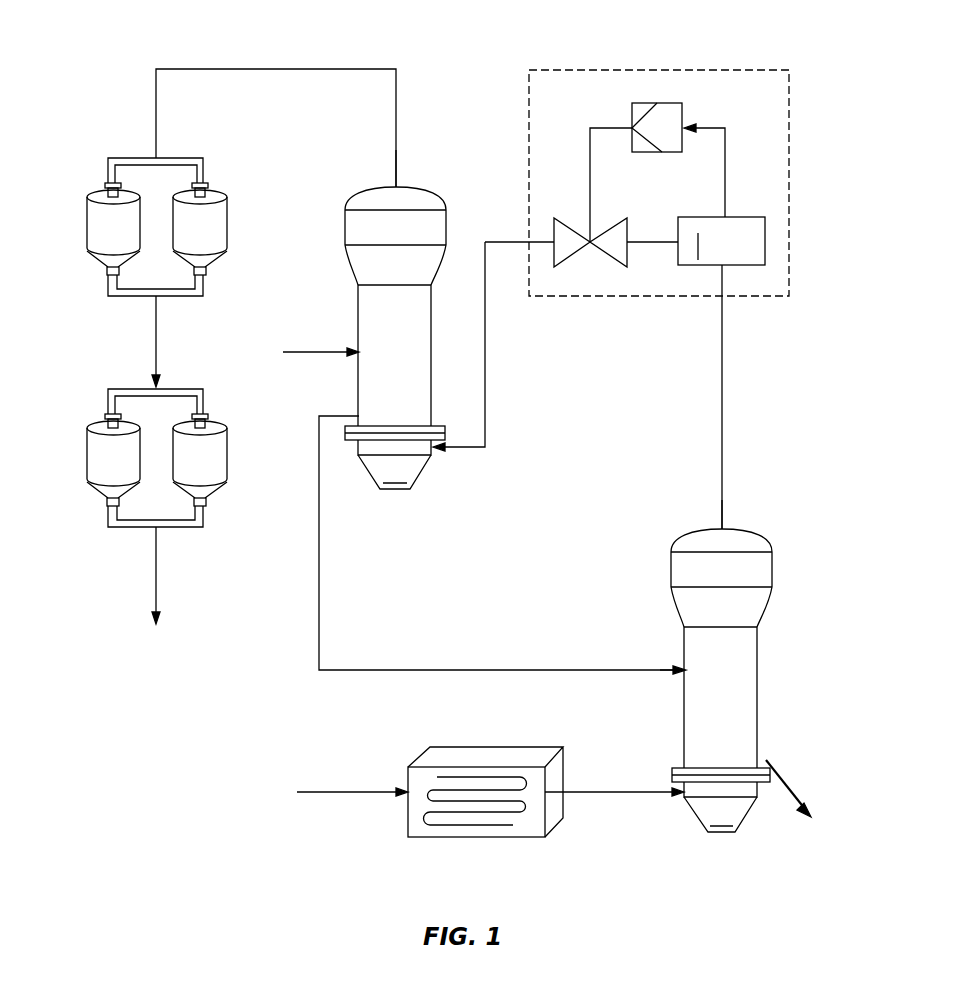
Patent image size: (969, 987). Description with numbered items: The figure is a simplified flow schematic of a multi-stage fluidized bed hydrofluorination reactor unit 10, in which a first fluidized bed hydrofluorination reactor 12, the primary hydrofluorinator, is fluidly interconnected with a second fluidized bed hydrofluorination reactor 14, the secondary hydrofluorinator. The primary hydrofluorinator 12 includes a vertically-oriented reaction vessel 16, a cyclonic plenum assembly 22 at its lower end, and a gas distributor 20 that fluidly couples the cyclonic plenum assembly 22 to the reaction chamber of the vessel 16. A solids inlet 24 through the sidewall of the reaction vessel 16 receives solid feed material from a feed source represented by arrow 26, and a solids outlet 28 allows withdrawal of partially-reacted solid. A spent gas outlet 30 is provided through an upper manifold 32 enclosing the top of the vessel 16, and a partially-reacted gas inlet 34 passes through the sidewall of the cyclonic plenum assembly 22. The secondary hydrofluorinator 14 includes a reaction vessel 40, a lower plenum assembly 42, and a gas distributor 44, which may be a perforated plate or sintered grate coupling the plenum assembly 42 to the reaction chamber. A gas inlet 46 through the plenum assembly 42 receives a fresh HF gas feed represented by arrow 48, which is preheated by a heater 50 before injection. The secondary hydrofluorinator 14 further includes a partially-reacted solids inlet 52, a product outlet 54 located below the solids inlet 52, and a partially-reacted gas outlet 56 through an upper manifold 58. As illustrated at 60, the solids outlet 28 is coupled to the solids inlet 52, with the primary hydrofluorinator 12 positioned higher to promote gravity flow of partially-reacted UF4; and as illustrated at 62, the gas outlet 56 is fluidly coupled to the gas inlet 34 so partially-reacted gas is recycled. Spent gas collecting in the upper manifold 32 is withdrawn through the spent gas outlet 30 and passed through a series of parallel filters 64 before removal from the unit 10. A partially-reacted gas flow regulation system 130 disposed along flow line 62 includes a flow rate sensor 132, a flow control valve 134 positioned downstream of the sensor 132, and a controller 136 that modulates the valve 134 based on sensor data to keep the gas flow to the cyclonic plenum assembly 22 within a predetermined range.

The multi-stage fluidized bed hydrofluorination reactor unit 10 is at (141, 52).
The first fluidized bed hydrofluorination reactor 12 is at (348, 305).
The second fluidized bed hydrofluorination reactor 14 is at (770, 671).
The reaction vessel 16 is at (403, 345).
The gas distributor 20 is at (402, 426).
The cyclonic plenum assembly 22 is at (407, 483).
The solids inlet 24 is at (356, 355).
The feed source 26 is at (315, 352).
The solids outlet 28 is at (358, 413).
The spent gas outlet 30 is at (394, 177).
The upper manifold 32 is at (406, 240).
The partially-reacted gas inlet 34 is at (433, 452).
The reaction vessel 40 is at (731, 708).
The lower plenum assembly 42 is at (728, 770).
The gas distributor 44 is at (731, 825).
The gas inlet 46 is at (678, 795).
The fresh reactant gas feed 48 is at (352, 790).
The heater 50 is at (485, 757).
The partially-reacted solids inlet 52 is at (683, 673).
The product outlet 54 is at (758, 755).
The partially-reacted gas outlet 56 is at (726, 529).
The upper manifold 58 is at (731, 583).
The solids coupling 60 is at (550, 668).
The flow line 62 is at (722, 352).
The parallel filters 64 is at (100, 226).
The partially-reacted gas flow regulation system 130 is at (772, 127).
The flow rate sensor 132 is at (742, 223).
The flow control valve 134 is at (580, 237).
The controller 136 is at (663, 148).